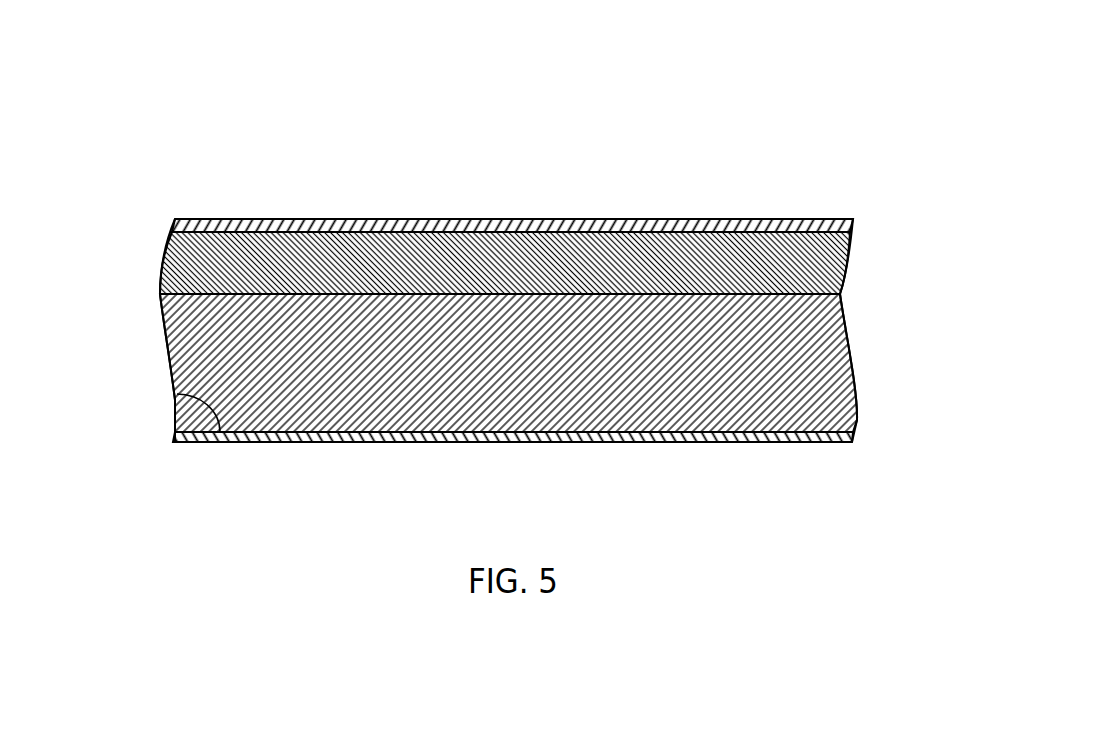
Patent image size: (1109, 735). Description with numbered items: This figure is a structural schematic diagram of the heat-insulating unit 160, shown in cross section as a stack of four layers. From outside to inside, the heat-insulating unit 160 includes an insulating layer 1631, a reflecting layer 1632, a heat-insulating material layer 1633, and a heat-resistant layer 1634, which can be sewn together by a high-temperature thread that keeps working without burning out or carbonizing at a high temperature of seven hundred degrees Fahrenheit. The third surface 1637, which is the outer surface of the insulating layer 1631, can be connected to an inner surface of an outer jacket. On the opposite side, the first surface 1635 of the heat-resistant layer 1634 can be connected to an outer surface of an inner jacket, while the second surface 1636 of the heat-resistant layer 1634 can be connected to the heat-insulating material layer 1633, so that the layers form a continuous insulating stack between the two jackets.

The heat-insulating unit 160 is at (728, 89).
The insulating layer 1631 is at (828, 217).
The reflecting layer 1632 is at (843, 257).
The heat-insulating material layer 1633 is at (848, 378).
The heat-resistant layer 1634 is at (813, 432).
The first surface 1635 is at (500, 442).
The second surface 1636 is at (178, 397).
The third surface 1637 is at (545, 220).